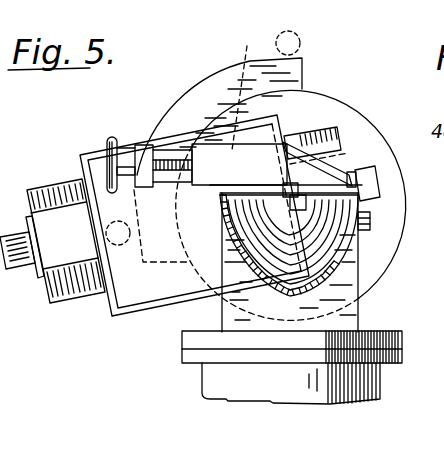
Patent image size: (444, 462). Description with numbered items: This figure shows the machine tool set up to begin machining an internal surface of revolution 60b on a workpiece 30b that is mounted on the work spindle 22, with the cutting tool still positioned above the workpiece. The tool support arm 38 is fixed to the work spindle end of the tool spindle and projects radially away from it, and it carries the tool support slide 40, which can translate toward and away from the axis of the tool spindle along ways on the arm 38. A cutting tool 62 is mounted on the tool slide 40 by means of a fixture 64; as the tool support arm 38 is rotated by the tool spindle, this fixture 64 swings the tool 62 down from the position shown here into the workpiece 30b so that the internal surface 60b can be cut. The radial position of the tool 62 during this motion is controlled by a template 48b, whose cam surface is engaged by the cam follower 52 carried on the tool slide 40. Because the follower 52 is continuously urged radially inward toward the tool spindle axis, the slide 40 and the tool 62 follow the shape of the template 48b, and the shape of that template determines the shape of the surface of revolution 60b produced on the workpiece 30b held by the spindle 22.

The work spindle 22 is at (332, 381).
The workpiece 30b is at (338, 277).
The tool support arm 38 is at (75, 294).
The tool support slide 40 is at (136, 298).
The template 48b is at (200, 76).
The cam follower 52 is at (301, 42).
The internal surface of revolution 60b is at (335, 247).
The cutting tool 62 is at (350, 176).
The fixture 64 is at (244, 86).